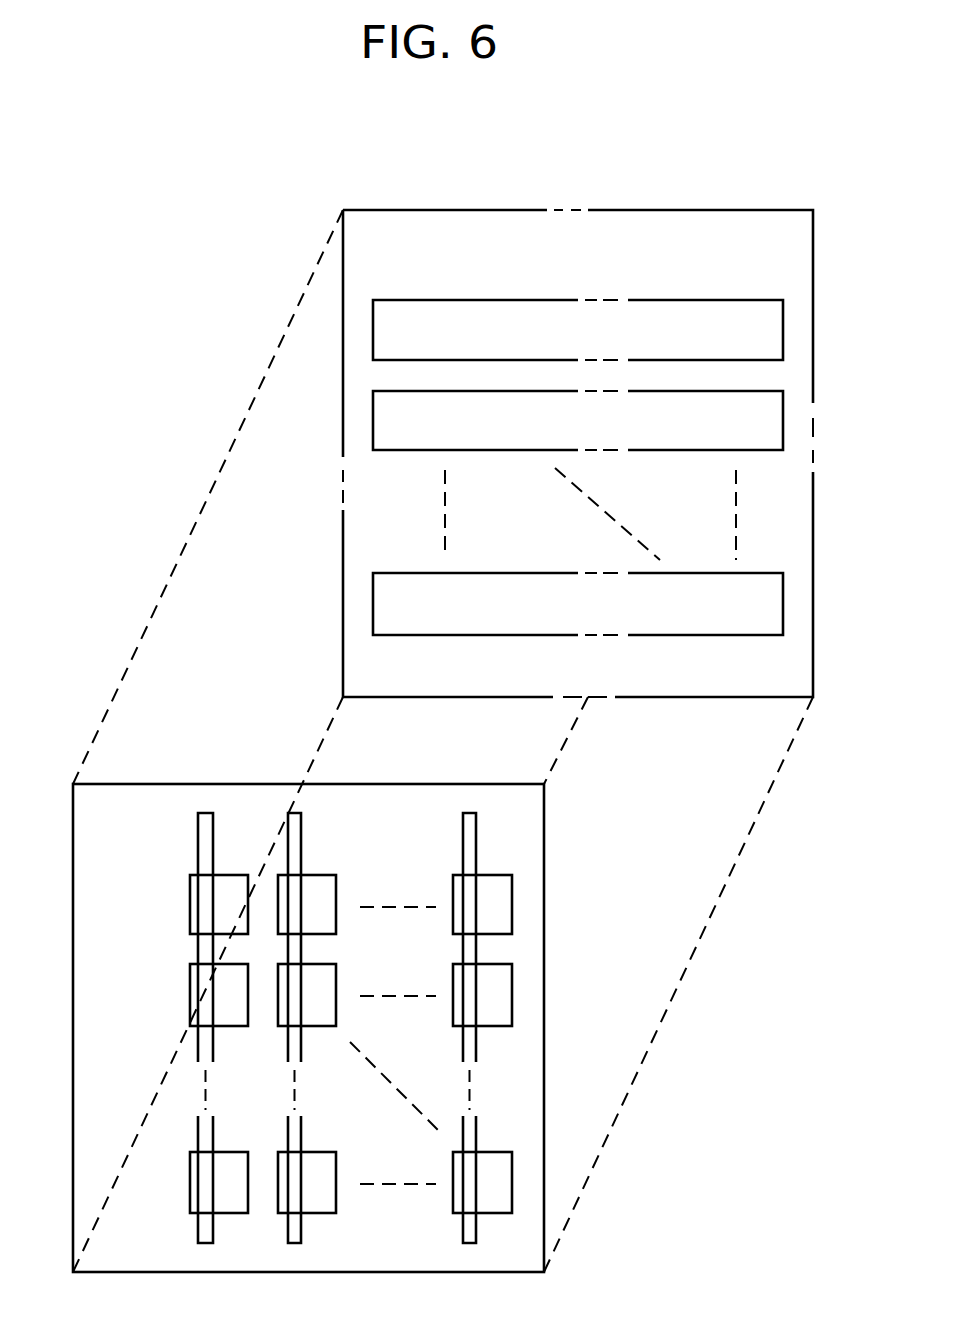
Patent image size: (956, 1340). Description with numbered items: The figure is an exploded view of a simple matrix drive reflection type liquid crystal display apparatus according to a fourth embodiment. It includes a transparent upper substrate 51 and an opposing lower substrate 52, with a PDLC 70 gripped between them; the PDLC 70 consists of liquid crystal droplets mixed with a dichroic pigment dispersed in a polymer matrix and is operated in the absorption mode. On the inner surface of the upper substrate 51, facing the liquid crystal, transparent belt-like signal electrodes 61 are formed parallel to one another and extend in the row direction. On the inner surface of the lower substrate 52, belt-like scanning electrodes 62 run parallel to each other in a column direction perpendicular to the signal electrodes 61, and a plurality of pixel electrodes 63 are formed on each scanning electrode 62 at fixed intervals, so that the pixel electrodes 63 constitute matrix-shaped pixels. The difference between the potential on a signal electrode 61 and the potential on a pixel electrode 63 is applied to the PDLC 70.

The upper substrate 51 is at (343, 634).
The lower substrate 52 is at (544, 1110).
The signal electrode 61 is at (373, 323).
The scanning electrode 62 is at (478, 855).
The pixel electrode 63 is at (517, 913).
The PDLC 70 is at (715, 905).